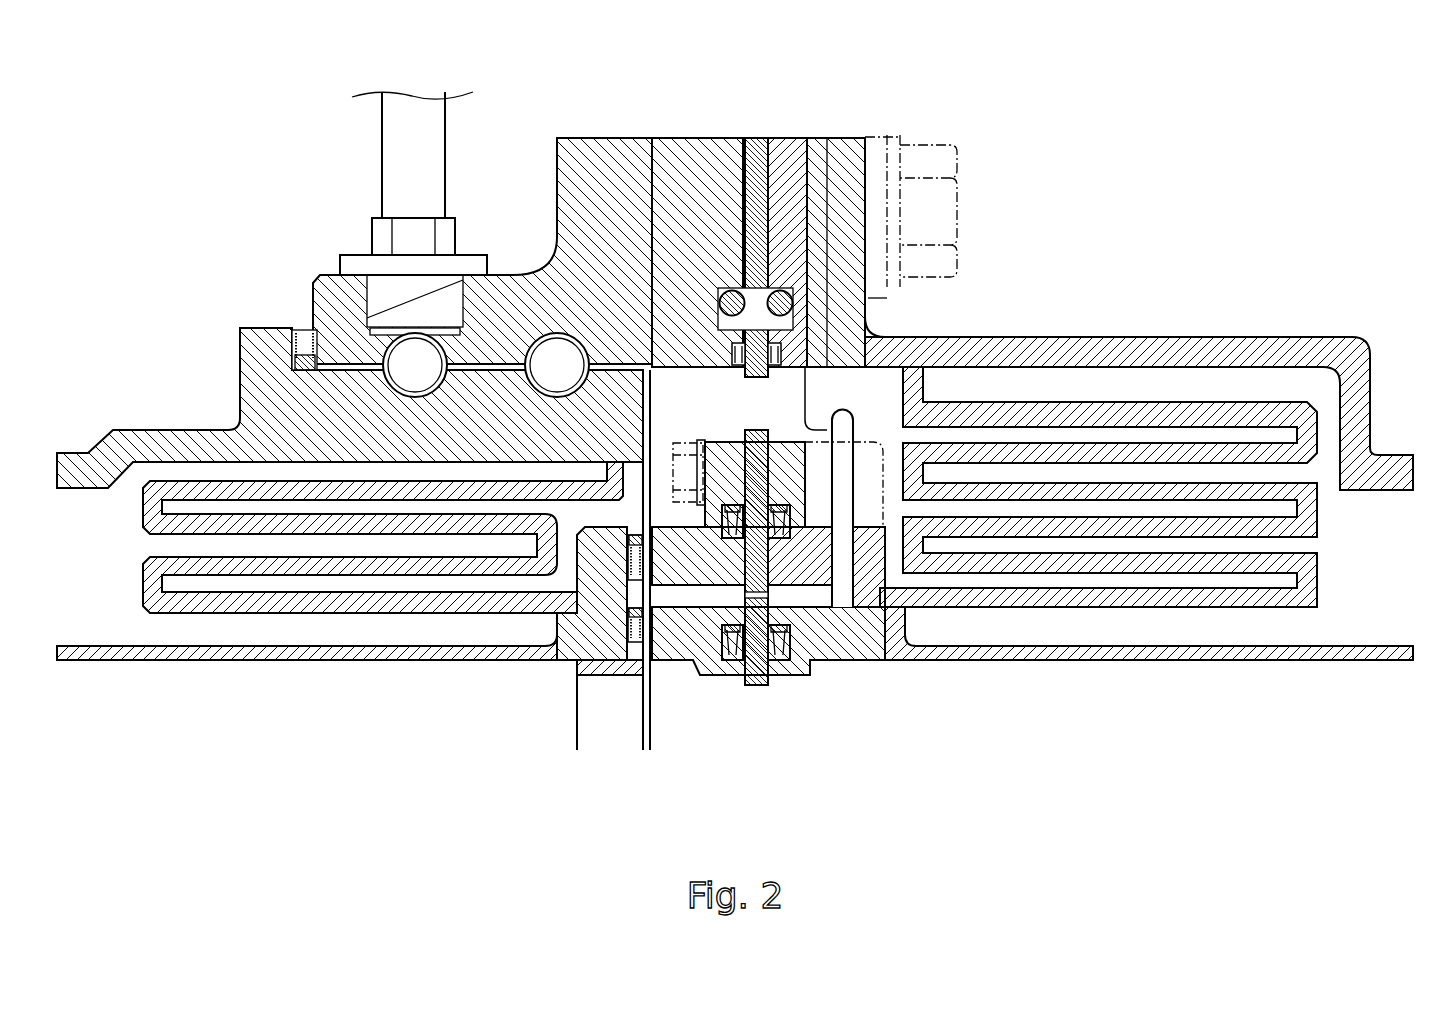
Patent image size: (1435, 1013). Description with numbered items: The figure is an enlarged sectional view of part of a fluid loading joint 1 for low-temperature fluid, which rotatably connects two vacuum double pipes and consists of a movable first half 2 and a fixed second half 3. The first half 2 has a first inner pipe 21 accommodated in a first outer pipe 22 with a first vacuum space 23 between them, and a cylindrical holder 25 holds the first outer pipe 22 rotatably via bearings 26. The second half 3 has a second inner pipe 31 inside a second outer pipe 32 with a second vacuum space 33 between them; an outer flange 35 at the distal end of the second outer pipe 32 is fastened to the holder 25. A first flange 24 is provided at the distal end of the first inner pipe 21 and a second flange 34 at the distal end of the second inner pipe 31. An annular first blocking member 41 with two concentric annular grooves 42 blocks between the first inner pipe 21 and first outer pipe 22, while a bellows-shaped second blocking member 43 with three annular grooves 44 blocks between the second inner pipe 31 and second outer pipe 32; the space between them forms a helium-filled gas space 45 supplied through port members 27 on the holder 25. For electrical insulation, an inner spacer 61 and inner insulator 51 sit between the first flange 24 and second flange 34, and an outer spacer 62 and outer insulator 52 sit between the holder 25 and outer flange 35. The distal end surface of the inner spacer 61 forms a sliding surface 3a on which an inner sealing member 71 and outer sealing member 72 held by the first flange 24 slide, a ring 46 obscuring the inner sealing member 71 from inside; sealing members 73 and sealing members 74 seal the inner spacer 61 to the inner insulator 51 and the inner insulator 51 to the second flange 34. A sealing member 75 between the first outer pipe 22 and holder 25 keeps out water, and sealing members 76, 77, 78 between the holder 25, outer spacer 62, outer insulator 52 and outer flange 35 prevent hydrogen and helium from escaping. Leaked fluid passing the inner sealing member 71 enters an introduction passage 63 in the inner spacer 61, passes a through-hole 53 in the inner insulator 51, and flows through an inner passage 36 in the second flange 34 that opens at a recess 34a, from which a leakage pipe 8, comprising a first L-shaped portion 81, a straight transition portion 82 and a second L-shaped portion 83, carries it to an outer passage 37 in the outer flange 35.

The fluid loading joint 1 is at (1157, 222).
The first half 2 is at (165, 430).
The second half 3 is at (1310, 335).
The sliding surface 3a is at (597, 662).
The leakage pipe 8 is at (857, 413).
The first inner pipe 21 is at (258, 660).
The first outer pipe 22 is at (268, 417).
The first vacuum space 23 is at (112, 585).
The first flange 24 is at (593, 600).
The holder 25 is at (578, 163).
The bearings 26 is at (415, 355).
The port members 27 is at (412, 227).
The second inner pipe 31 is at (1220, 650).
The second outer pipe 32 is at (1218, 338).
The second vacuum space 33 is at (1350, 577).
The second flange 34 is at (912, 560).
The recess 34a is at (905, 630).
The outer flange 35 is at (840, 143).
The inner passage 36 is at (870, 575).
The outer passage 37 is at (863, 235).
The first blocking member 41 is at (347, 612).
The annular grooves 42 is at (473, 508).
The second blocking member 43 is at (1107, 607).
The annular grooves 44 is at (997, 433).
The gas space 45 is at (692, 397).
The ring 46 is at (632, 662).
The inner insulator 51 is at (755, 597).
The outer insulator 52 is at (757, 147).
The through-hole 53 is at (807, 598).
The inner spacer 61 is at (692, 628).
The outer spacer 62 is at (687, 163).
The introduction passage 63 is at (677, 633).
The inner sealing member 71 is at (612, 662).
The outer sealing member 72 is at (688, 470).
The sealing members 73 is at (738, 505).
The sealing members 74 is at (787, 505).
The sealing member 75 is at (304, 345).
The sealing member 76 is at (737, 292).
The sealing member 77 is at (784, 290).
The sealing member 78 is at (625, 335).
The first L-shaped portion 81 is at (848, 478).
The straight transition portion 82 is at (905, 395).
The second L-shaped portion 83 is at (868, 360).